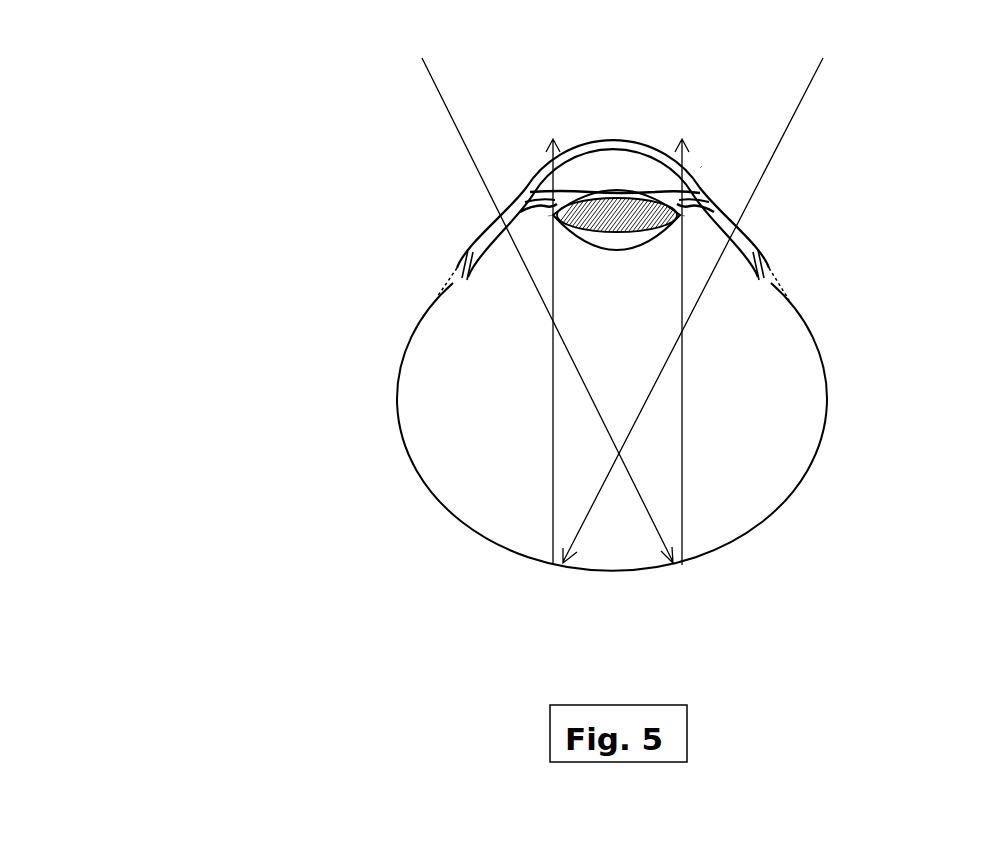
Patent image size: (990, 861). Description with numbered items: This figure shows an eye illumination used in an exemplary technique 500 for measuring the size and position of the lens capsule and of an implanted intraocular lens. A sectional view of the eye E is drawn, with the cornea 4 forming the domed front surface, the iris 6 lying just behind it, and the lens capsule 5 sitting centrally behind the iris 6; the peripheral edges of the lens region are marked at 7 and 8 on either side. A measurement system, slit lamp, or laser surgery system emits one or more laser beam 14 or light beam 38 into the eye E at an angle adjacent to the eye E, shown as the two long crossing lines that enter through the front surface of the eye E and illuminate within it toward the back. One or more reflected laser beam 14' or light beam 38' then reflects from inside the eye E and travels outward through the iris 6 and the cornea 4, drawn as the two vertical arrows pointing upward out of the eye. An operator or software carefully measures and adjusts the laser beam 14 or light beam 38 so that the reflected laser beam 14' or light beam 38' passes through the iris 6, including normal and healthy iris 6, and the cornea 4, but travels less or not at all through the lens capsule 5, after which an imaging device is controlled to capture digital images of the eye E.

The technique for measuring the size and position of the lens capsule and implanted 500 is at (259, 61).
The cornea 4 is at (610, 140).
The lens capsule 5 is at (623, 250).
The iris 6 is at (701, 168).
The left lens edge / zonule 7 is at (545, 225).
The right lens edge / zonule 8 is at (686, 226).
The laser beam 14 is at (684, 305).
The light beam 38 is at (684, 305).
The reflected laser beam 14' is at (578, 314).
The reflected light beam 38' is at (578, 314).
The eye E is at (841, 236).